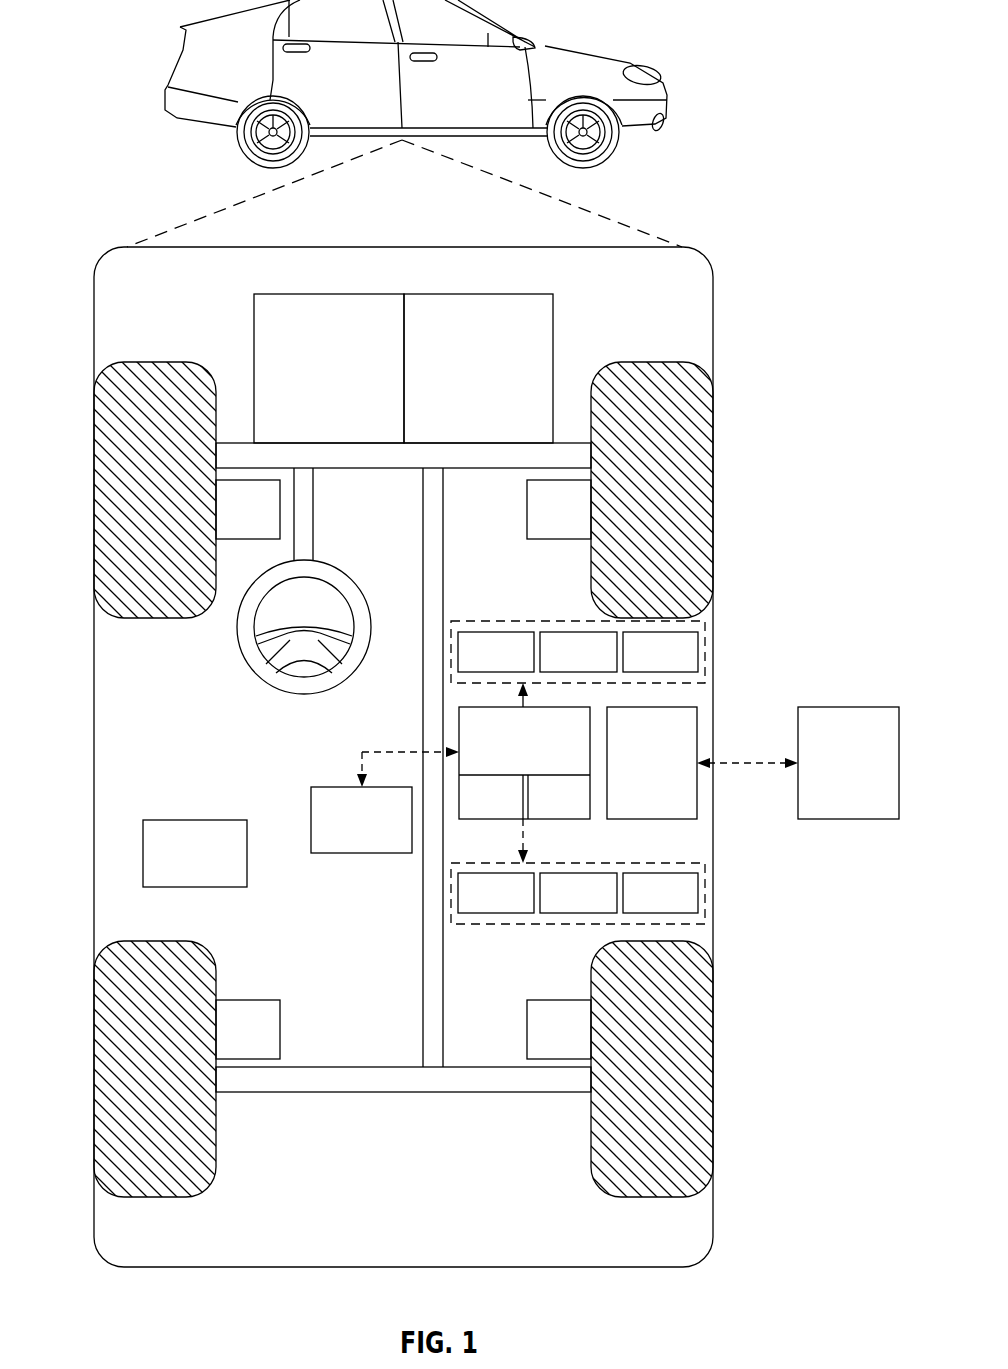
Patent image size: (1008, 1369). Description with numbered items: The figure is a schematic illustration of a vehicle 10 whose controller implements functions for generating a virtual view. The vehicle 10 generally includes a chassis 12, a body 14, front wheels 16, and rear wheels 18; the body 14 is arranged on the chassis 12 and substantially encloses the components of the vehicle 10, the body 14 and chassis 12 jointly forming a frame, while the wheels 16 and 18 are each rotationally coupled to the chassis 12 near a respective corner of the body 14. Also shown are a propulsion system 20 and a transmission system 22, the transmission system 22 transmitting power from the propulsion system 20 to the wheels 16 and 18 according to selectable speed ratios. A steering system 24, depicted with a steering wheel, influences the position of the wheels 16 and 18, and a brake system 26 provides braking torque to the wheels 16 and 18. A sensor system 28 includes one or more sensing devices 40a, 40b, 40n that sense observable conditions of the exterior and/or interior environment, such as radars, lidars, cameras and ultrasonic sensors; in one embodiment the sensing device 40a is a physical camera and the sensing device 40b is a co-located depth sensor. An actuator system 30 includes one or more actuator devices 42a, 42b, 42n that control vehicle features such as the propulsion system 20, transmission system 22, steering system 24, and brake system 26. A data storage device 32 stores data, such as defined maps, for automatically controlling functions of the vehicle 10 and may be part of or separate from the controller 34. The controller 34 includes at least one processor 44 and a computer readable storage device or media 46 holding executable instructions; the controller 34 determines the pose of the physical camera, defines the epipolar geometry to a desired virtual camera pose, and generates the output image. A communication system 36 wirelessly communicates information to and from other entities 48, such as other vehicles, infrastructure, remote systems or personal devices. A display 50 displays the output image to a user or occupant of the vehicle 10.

The vehicle 10 is at (178, 53).
The chassis 12 is at (423, 936).
The body 14 is at (94, 718).
The front wheels 16 is at (152, 362).
The rear wheels 18 is at (155, 1197).
The propulsion system 20 is at (314, 382).
The transmission system 22 is at (463, 382).
The steering system 24 is at (327, 541).
The brake system 26 is at (233, 522).
The sensor system 28 is at (537, 621).
The actuator system 30 is at (542, 924).
The data storage device 32 is at (347, 832).
The controller 34 is at (509, 758).
The communication system 36 is at (637, 775).
The sensing device 40a is at (475, 663).
The sensing device 40b is at (556, 663).
The sensing device 40n is at (639, 663).
The actuator device 42a is at (475, 905).
The actuator device 42b is at (556, 905).
The actuator device 42n is at (639, 905).
The processor 44 is at (475, 812).
The computer readable storage device or media 46 is at (542, 812).
The other entities 48 is at (834, 775).
The display 50 is at (180, 867).